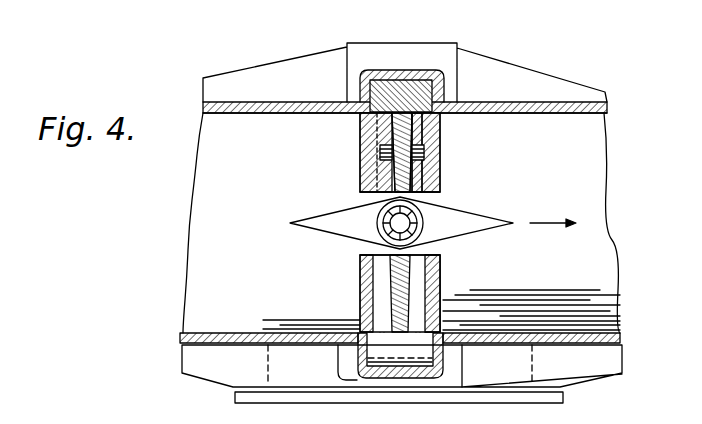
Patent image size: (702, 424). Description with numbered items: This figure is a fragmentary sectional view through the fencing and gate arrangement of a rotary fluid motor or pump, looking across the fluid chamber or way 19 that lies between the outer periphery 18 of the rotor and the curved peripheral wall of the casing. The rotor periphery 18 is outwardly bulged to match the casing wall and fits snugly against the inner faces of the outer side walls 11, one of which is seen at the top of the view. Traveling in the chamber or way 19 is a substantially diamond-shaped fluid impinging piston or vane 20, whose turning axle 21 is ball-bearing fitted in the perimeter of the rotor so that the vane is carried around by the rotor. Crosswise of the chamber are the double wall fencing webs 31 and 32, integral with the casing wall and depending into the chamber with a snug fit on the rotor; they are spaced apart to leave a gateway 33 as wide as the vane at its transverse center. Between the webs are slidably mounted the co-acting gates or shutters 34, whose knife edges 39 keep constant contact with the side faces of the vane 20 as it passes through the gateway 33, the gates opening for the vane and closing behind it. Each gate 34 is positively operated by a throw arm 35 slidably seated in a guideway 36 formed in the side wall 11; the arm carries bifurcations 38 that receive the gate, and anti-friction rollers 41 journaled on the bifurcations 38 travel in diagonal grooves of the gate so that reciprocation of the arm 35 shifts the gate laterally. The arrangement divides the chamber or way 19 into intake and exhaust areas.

The outer side wall 11 is at (572, 102).
The outer periphery of the rotor 18 is at (401, 223).
The fluid chamber or way 19 is at (600, 300).
The fluid impinging piston or vane 20 is at (313, 215).
The turning axle 21 is at (422, 213).
The fencing web 31 is at (362, 300).
The fencing web 32 is at (362, 155).
The gateway 33 is at (367, 252).
The gate or shutter 34 is at (425, 130).
The throw arm 35 is at (440, 72).
The guideway 36 is at (404, 78).
The bifurcation 38 is at (410, 163).
The knife edge 39 is at (417, 185).
The anti-friction roller 41 is at (395, 140).